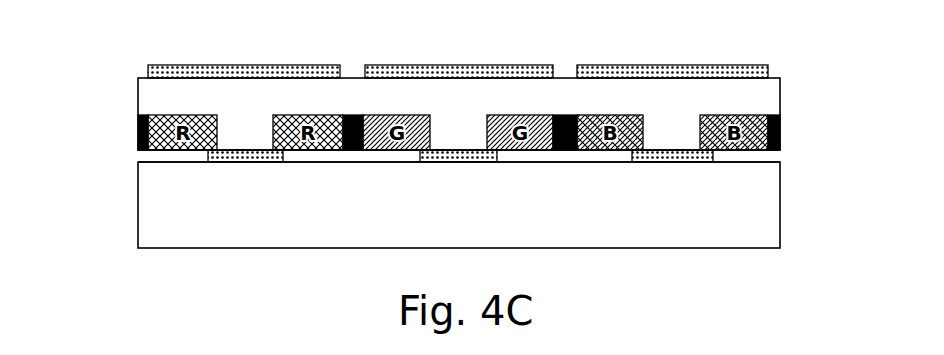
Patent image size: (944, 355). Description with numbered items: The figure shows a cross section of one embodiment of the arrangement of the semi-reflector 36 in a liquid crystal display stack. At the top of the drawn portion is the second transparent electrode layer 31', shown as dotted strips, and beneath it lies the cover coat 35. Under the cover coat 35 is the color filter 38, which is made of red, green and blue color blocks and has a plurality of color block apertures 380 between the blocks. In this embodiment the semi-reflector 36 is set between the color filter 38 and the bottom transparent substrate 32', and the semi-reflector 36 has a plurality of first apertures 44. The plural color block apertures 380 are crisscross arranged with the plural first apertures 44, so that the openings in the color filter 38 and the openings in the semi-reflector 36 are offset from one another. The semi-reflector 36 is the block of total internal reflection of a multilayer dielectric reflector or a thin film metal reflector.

The second transparent electrode layer 31' is at (432, 45).
The cover coat 35 is at (145, 92).
The color filter 38 is at (138, 128).
The color block apertures 380 is at (237, 132).
The first apertures 44 is at (341, 157).
The semi-reflector 36 is at (666, 159).
The bottom transparent substrate 32' is at (495, 205).